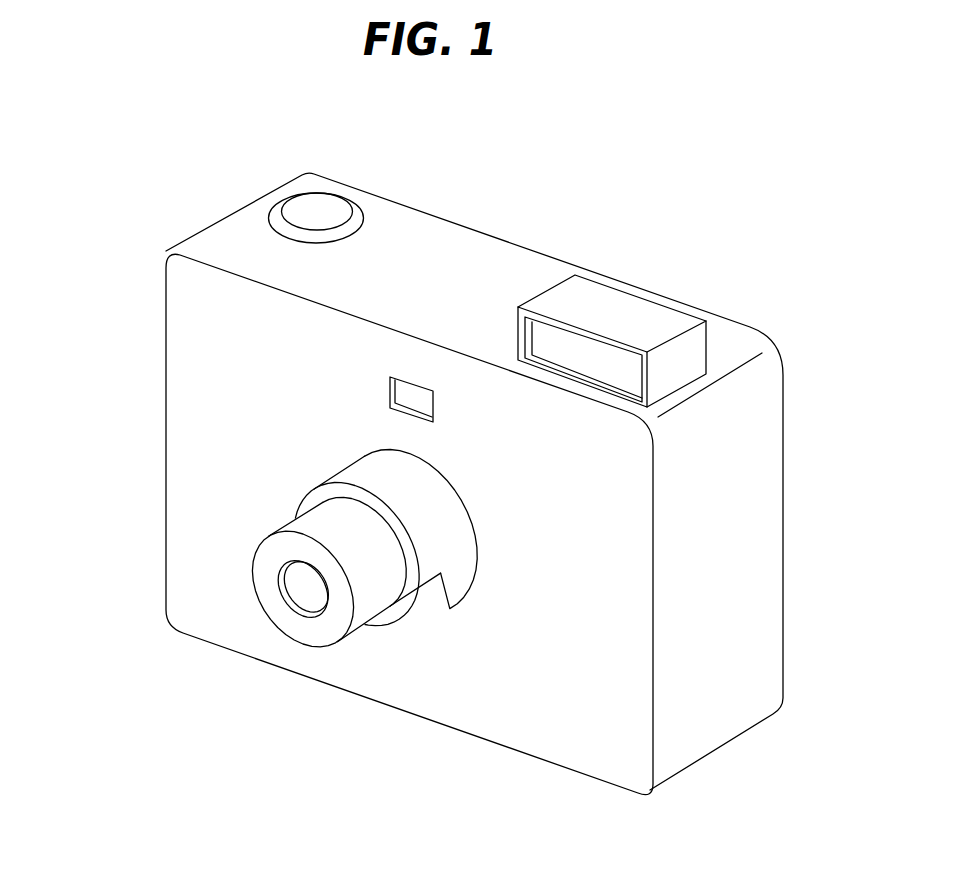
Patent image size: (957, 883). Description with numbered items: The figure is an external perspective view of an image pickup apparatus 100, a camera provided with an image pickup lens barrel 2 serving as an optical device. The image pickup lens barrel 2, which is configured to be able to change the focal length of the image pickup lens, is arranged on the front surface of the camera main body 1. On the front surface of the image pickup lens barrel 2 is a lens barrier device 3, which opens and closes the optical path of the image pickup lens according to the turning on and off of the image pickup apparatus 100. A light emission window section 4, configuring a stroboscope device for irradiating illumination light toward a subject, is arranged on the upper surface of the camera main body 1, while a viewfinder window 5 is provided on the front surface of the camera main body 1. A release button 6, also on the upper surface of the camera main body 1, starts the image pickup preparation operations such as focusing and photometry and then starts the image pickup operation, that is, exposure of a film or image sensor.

The image pickup apparatus 100 is at (608, 180).
The camera main body 1 is at (198, 442).
The image pickup lens barrel 2 is at (372, 582).
The lens barrier device 3 is at (306, 586).
The light emission window section 4 is at (600, 360).
The viewfinder window 5 is at (410, 397).
The release button 6 is at (315, 212).